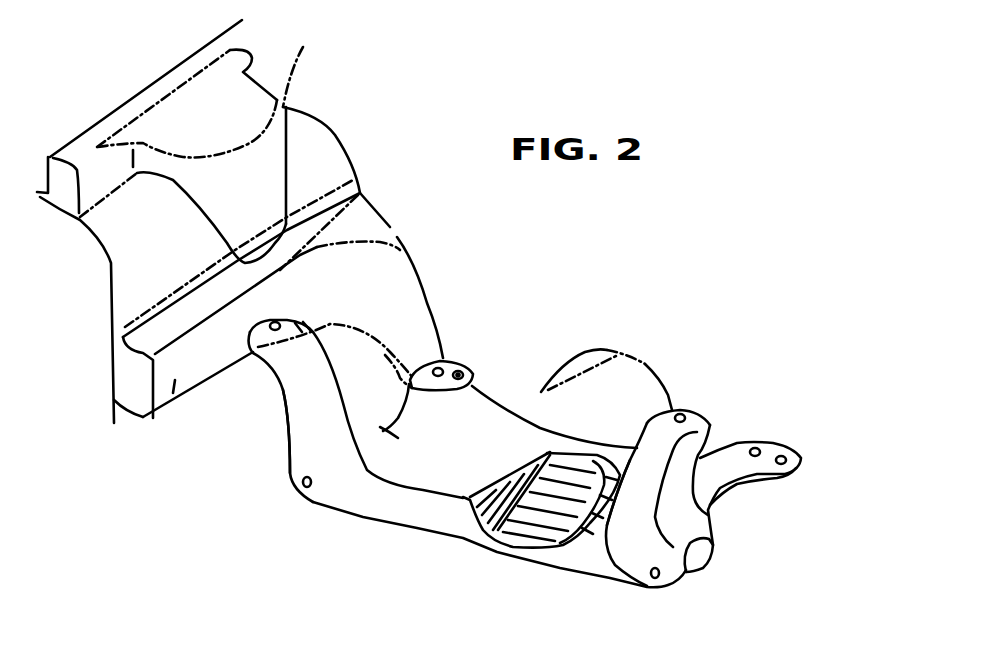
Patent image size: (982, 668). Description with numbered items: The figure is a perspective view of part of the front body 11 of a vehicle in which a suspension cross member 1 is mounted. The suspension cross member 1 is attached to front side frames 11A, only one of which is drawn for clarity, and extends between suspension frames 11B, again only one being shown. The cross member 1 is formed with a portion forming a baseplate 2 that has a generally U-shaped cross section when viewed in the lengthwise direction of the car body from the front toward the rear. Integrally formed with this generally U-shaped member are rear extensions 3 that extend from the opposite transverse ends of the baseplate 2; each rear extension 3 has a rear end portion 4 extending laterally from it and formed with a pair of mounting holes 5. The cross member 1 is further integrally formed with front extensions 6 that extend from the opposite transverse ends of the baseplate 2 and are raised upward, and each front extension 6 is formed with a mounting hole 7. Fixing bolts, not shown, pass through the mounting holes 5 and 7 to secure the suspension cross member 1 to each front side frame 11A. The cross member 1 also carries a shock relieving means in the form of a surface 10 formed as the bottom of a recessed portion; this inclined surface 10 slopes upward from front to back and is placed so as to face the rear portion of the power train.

The suspension cross member 1 is at (397, 507).
The baseplate 2 is at (500, 423).
The rear extension 3 is at (402, 404).
The rear end portion 4 is at (463, 360).
The mounting hole 5 is at (442, 364).
The front extension 6 is at (297, 402).
The mounting hole 7 is at (277, 323).
The inclined surface 10 is at (530, 530).
The front body 11 is at (240, 245).
The front side frame 11A is at (172, 383).
The suspension frame 11B is at (320, 61).